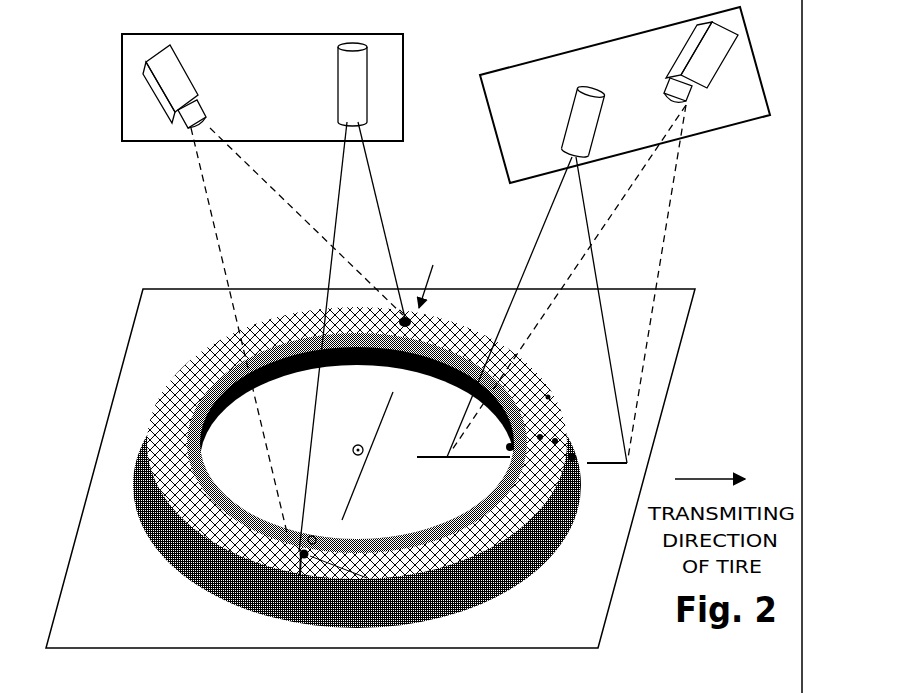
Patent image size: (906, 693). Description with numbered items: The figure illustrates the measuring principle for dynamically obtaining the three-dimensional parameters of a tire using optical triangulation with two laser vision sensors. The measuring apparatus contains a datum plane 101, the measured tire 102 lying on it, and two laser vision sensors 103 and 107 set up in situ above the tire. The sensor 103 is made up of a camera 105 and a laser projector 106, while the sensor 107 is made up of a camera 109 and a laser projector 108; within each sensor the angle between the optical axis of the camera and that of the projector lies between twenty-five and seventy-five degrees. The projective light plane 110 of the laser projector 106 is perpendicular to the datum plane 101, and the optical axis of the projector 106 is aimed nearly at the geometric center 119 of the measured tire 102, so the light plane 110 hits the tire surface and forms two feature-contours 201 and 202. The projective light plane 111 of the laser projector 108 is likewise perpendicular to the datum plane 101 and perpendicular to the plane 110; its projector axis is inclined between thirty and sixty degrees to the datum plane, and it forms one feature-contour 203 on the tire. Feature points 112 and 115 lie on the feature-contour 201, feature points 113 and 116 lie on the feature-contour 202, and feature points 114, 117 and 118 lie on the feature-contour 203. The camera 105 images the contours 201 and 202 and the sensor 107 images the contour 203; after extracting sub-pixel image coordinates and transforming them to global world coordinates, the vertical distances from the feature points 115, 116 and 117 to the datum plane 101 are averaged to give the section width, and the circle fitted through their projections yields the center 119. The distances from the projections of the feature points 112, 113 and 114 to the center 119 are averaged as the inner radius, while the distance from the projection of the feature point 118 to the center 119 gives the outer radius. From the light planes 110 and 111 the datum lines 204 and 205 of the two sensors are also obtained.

The datum plane 101 is at (95, 468).
The measured tire 102 is at (188, 370).
The laser vision sensor 103 is at (143, 141).
The camera 105 is at (188, 80).
The laser projector 106 is at (337, 102).
The laser vision sensor 107 is at (493, 72).
The laser projector 108 is at (578, 87).
The camera 109 is at (718, 70).
The projective light plane 110 is at (374, 227).
The projective light plane 111 is at (545, 263).
The feature point 112 is at (317, 538).
The feature point 113 is at (395, 365).
The feature point 114 is at (508, 450).
The feature point 115 is at (440, 615).
The feature point 116 is at (413, 320).
The feature point 117 is at (548, 395).
The feature point 118 is at (574, 459).
The center of the measured tire 119 is at (354, 455).
The feature-contour 201 is at (262, 600).
The feature-contour 202 is at (439, 276).
The feature-contour 203 is at (560, 440).
The datum line 204 is at (392, 390).
The datum line 205 is at (430, 459).